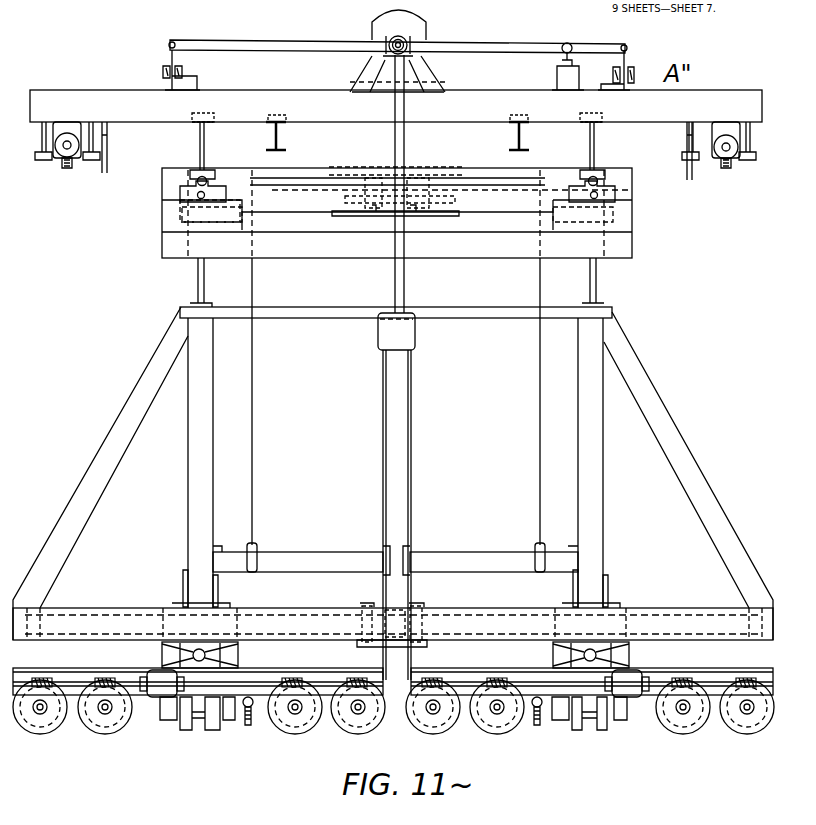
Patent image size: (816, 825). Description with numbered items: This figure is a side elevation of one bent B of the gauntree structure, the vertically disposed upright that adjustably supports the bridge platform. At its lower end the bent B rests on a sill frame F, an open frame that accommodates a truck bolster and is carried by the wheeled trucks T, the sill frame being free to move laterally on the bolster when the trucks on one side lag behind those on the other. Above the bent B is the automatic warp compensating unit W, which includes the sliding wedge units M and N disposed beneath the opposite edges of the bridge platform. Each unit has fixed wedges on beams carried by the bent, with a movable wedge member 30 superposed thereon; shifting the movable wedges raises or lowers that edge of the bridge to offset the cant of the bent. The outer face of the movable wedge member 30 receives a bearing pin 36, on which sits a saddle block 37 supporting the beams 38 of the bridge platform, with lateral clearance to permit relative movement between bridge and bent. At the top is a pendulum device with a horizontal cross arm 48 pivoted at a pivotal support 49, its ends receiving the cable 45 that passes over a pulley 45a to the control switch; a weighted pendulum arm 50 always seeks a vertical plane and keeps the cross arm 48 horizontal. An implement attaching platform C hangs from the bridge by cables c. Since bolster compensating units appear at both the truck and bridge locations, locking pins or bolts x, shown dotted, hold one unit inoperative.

The movable wedge member 30 is at (222, 192).
The bearing pin 36 is at (204, 178).
The saddle block 37 is at (194, 176).
The beams of the bridge platform 38 is at (200, 140).
The endless cable 45 is at (180, 52).
The pulley 45a is at (170, 62).
The horizontal cross arm 48 is at (506, 44).
The pivotal support 49 is at (386, 50).
The weighted pendulum arm 50 is at (395, 288).
The bent B is at (688, 406).
The implement attaching platform C is at (305, 550).
The cable c is at (256, 456).
The sill frame F is at (661, 612).
The sliding wedge unit M is at (654, 184).
The sliding wedge unit N is at (168, 155).
The wheeled truck T is at (389, 657).
The warp compensating unit W is at (471, 148).
The locking pin or bolt x is at (367, 603).